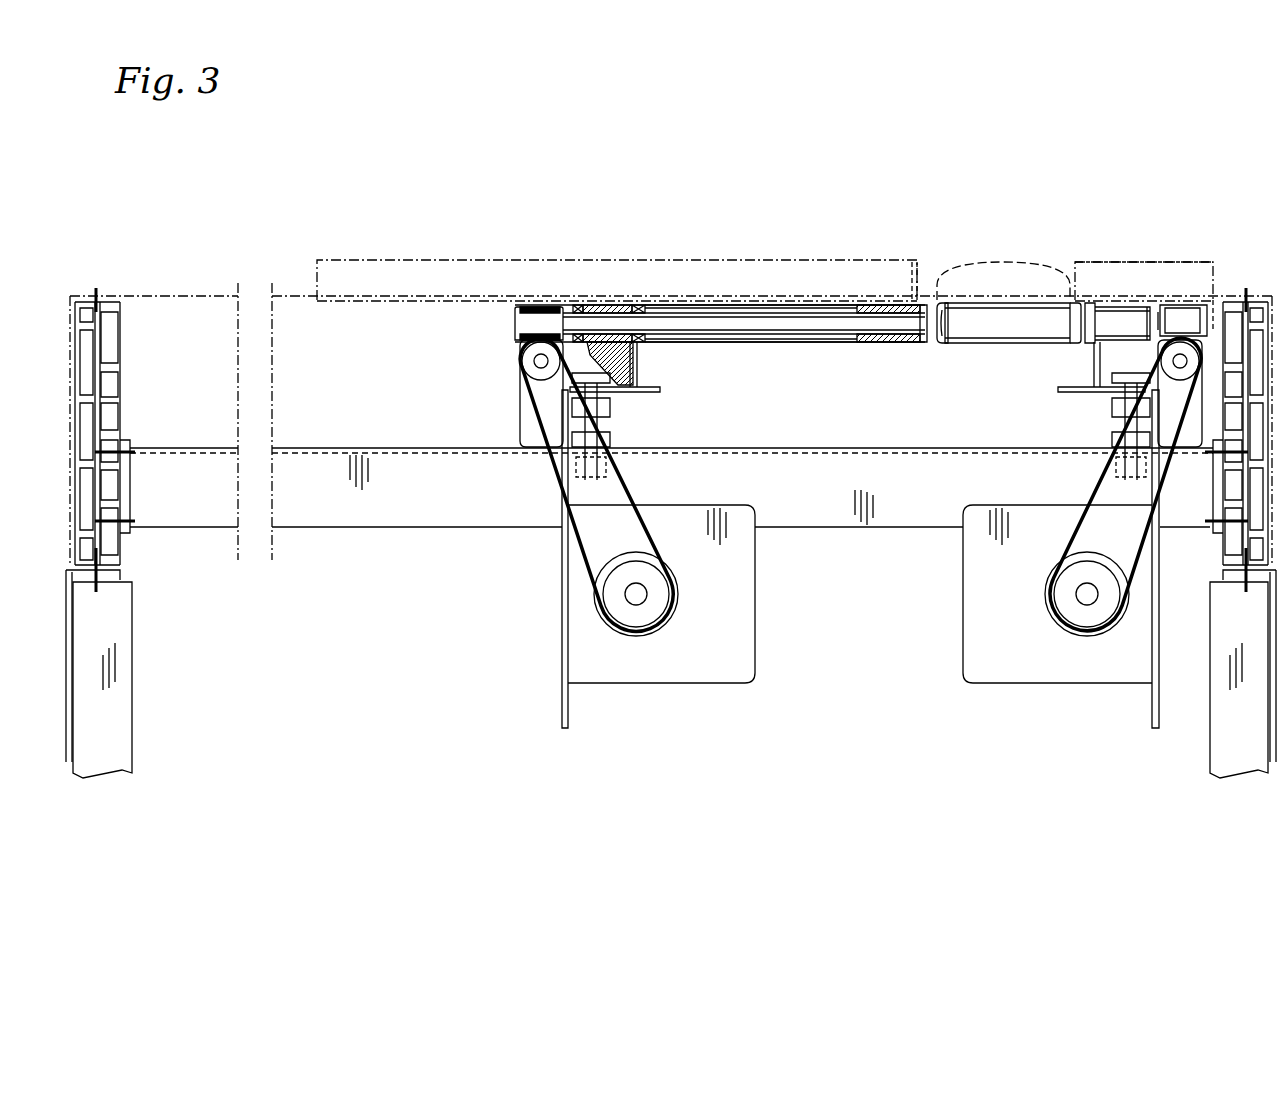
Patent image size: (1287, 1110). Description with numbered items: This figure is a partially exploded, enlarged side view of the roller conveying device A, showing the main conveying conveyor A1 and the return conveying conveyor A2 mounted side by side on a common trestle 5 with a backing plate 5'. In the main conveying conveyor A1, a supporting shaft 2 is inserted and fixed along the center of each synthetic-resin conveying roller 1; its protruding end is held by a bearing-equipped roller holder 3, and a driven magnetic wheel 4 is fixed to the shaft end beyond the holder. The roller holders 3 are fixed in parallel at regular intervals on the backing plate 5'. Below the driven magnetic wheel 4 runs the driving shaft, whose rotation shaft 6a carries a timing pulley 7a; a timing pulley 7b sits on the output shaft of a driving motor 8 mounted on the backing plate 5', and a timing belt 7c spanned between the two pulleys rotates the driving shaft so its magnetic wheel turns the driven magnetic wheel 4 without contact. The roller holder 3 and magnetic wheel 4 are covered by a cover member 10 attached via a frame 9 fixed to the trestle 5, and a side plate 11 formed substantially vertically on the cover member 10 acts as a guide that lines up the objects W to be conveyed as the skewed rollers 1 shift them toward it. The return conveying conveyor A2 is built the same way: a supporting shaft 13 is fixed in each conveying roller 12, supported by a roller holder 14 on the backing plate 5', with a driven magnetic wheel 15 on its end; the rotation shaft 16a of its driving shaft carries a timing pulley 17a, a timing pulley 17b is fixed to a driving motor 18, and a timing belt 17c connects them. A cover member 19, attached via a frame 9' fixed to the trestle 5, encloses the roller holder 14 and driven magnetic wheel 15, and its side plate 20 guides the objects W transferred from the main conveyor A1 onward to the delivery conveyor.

The conveying roller 1 is at (963, 320).
The supporting shaft 2 is at (1218, 300).
The roller holder 3 is at (1095, 335).
The driven magnetic wheel 4 is at (1183, 303).
The trestle 5 is at (671, 441).
The backing plate 5' is at (860, 411).
The rotation shaft 6a is at (1213, 305).
The timing pulley 7a is at (1250, 300).
The timing pulley 7b is at (1085, 620).
The timing belt 7c is at (1137, 552).
The driving motor 8 is at (993, 650).
The frame 9 is at (1231, 533).
The frame 9' is at (112, 533).
The cover member 10 is at (1117, 293).
The side plate 11 is at (1090, 262).
The conveying roller 12 is at (830, 342).
The supporting shaft 13 is at (760, 330).
The roller holder 14 is at (636, 348).
The driven magnetic wheel 15 is at (541, 305).
The rotation shaft 16a is at (535, 370).
The timing pulley 17a is at (528, 357).
The timing pulley 17b is at (633, 610).
The timing belt 17c is at (560, 545).
The driving motor 18 is at (700, 658).
The cover member 19 is at (417, 293).
The side plate 20 is at (912, 272).
The conveying device A is at (654, 259).
The main conveying conveyor A1 is at (989, 350).
The return conveying conveyor A2 is at (760, 295).
The object to be conveyed W is at (1000, 270).